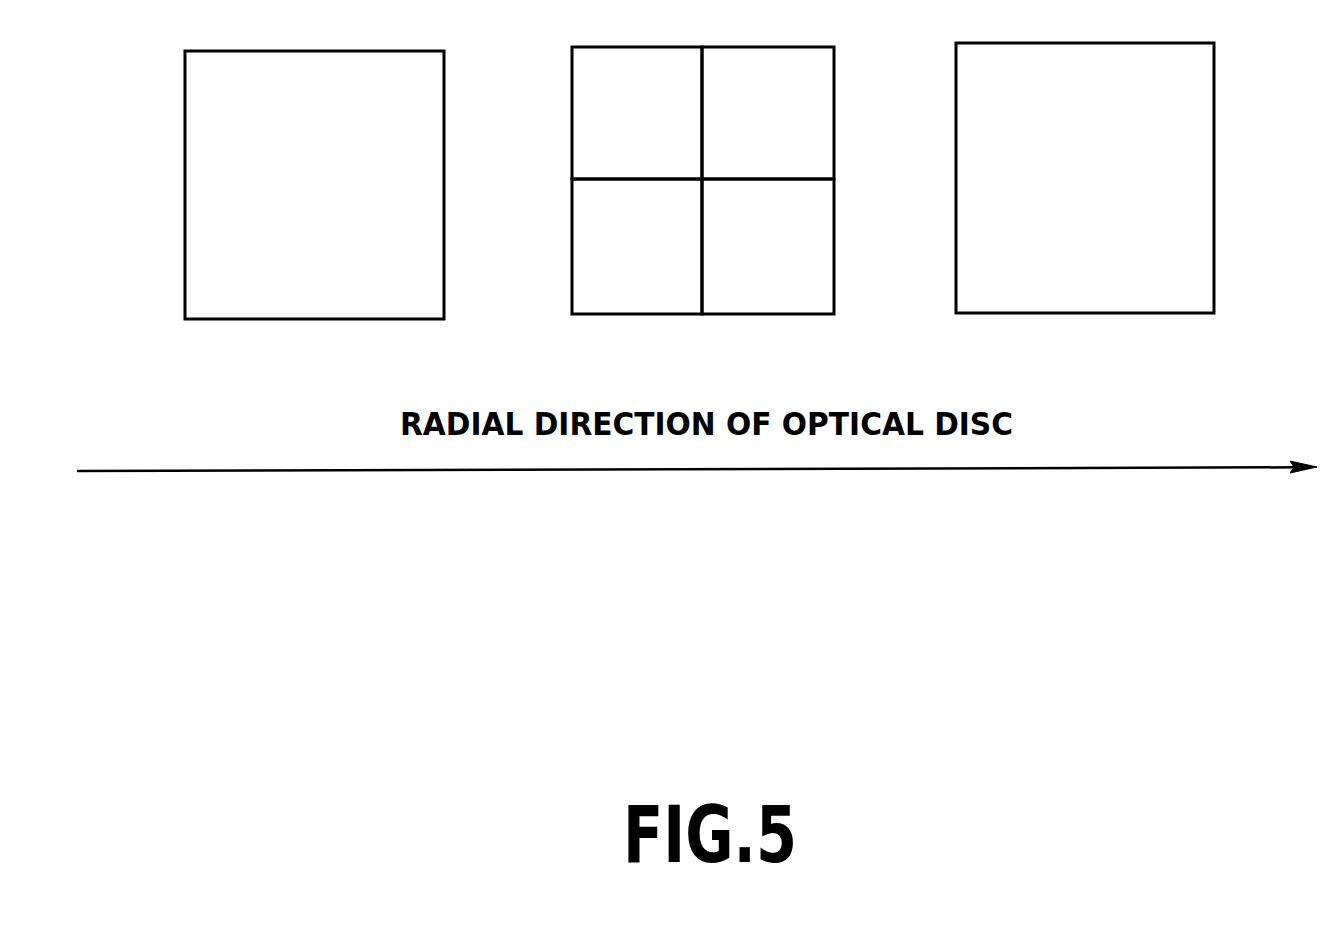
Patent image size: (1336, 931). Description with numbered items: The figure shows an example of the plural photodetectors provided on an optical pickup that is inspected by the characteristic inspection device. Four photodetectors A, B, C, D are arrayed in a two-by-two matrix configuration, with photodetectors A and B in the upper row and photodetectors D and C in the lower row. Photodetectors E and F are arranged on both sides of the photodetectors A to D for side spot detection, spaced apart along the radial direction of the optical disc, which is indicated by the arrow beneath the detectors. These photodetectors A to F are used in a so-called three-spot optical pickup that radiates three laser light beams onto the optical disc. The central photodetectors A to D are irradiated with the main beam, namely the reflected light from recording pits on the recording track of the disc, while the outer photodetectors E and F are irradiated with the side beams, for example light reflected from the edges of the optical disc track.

The photodetector A is at (637, 113).
The photodetector B is at (768, 113).
The photodetector C is at (768, 246).
The photodetector D is at (637, 246).
The photodetector E is at (314, 185).
The photodetector F is at (1085, 178).